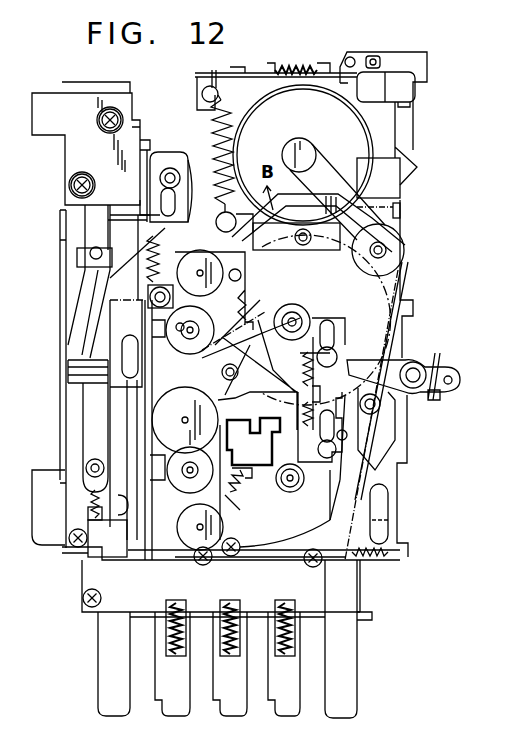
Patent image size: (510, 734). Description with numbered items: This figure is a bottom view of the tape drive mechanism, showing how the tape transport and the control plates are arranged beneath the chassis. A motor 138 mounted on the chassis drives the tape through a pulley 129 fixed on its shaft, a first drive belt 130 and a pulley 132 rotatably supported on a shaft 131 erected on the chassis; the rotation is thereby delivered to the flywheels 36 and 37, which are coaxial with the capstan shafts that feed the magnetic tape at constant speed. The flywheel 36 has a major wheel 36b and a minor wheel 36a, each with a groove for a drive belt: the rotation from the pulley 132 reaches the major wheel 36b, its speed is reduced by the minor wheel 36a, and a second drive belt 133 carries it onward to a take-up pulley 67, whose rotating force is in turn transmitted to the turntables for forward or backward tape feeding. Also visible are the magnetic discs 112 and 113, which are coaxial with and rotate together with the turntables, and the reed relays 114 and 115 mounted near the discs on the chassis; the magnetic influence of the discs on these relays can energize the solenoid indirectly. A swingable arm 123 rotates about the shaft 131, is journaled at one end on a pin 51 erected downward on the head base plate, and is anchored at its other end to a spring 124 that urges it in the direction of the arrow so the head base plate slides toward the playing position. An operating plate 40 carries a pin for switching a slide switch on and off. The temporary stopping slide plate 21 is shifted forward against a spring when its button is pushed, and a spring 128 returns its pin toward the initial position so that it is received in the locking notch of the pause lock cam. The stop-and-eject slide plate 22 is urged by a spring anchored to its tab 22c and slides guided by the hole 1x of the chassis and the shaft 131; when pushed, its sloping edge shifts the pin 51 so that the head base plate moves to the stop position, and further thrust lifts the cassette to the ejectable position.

The temporary stopping slide plate 21 is at (105, 672).
The stop-and-eject slide plate 22 is at (352, 678).
The tab 22c is at (413, 307).
The hole 1x is at (352, 620).
The flywheel 36 is at (353, 315).
The minor wheel 36a is at (283, 313).
The major wheel 36b is at (258, 258).
The flywheel 37 is at (278, 537).
The operating plate 40 is at (392, 369).
The pin 51 is at (385, 412).
The take-up pulley 67 is at (152, 418).
The magnetic disc 112 is at (188, 350).
The magnetic disc 113 is at (168, 473).
The reed relay 114 is at (148, 327).
The reed relay 115 is at (160, 472).
The swingable arm 123 is at (378, 178).
The spring 124 is at (212, 135).
The spring 128 is at (144, 277).
The pulley 129 is at (301, 141).
The first drive belt 130 is at (400, 215).
The shaft 131 is at (400, 246).
The pulley 132 is at (386, 254).
The second drive belt 133 is at (275, 357).
The motor 138 is at (353, 141).